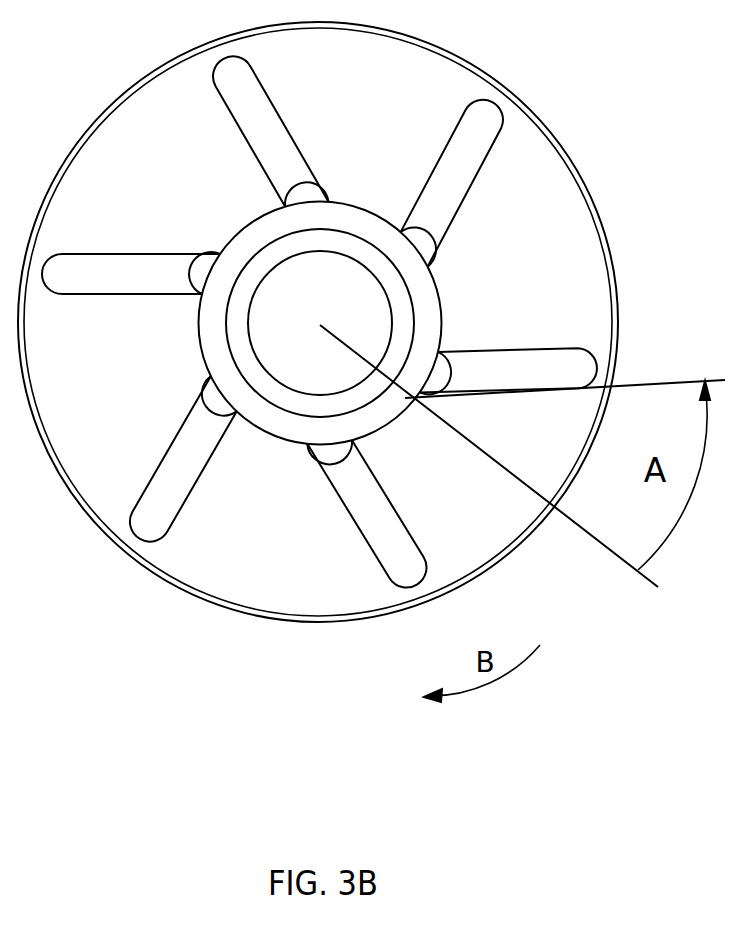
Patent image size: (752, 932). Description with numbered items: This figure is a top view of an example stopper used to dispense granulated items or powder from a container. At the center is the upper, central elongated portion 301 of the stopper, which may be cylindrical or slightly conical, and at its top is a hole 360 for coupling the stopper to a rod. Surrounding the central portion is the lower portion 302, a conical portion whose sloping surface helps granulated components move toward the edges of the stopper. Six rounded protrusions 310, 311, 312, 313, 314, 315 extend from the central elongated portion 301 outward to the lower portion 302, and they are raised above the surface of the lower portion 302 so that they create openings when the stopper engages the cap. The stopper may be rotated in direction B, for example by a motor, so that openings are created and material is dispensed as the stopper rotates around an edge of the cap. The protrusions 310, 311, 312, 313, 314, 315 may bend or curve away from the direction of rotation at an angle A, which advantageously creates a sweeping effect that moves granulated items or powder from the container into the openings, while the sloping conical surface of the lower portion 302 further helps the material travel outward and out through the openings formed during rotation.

The central elongated portion 301 is at (254, 222).
The lower portion 302 is at (190, 48).
The protrusion 310 is at (308, 162).
The protrusion 311 is at (449, 233).
The protrusion 312 is at (458, 395).
The protrusion 313 is at (405, 522).
The protrusion 314 is at (165, 448).
The protrusion 315 is at (90, 296).
The hole 360 is at (299, 310).